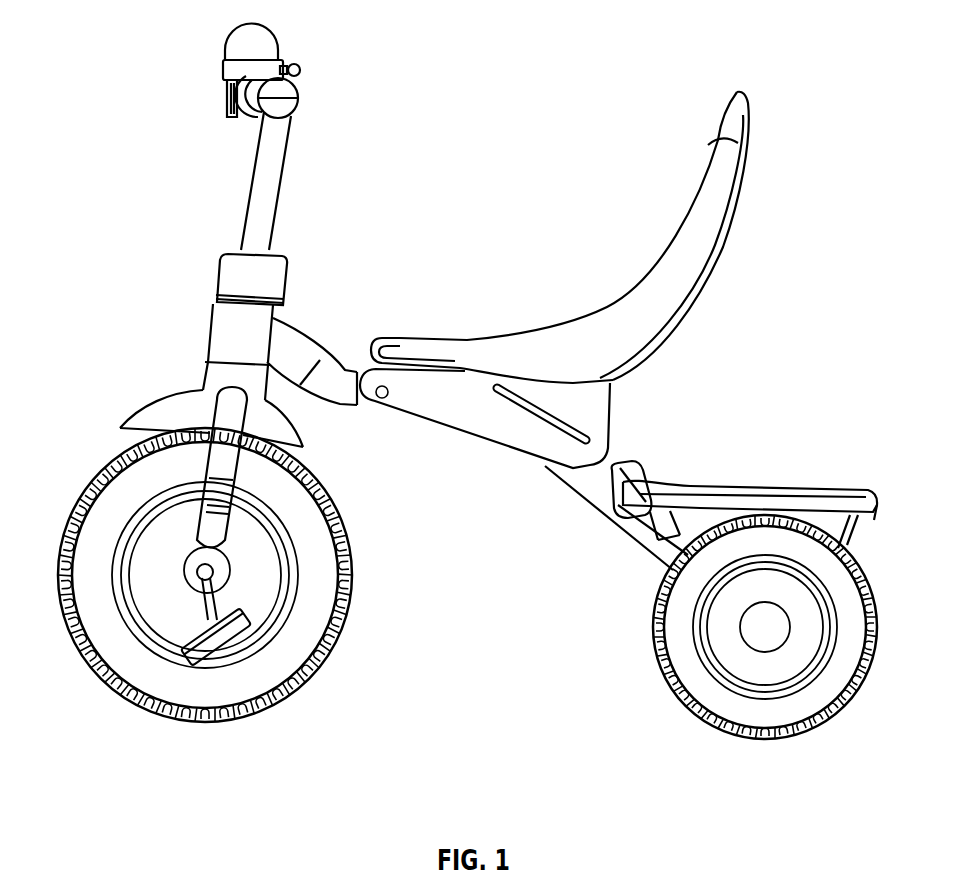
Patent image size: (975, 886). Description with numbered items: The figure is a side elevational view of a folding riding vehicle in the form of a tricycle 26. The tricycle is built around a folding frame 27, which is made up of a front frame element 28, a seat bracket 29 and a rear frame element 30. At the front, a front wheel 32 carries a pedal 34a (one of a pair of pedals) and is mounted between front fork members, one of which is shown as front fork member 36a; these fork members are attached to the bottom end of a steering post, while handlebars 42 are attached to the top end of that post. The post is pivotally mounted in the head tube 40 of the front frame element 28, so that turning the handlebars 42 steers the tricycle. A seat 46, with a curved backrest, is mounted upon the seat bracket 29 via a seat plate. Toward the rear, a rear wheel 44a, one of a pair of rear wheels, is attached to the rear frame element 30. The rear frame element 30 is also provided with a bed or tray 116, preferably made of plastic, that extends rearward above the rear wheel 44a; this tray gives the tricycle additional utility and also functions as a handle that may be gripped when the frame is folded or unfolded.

The tricycle 26 is at (189, 749).
The folding frame 27 is at (457, 520).
The front frame element 28 is at (300, 337).
The seat bracket 29 is at (614, 412).
The rear frame element 30 is at (596, 462).
The front wheel 32 is at (92, 666).
The pedal 34a is at (218, 663).
The front fork member 36a is at (228, 466).
The head tube 40 is at (213, 328).
The handlebars 42 is at (299, 97).
The rear wheel 44a is at (778, 736).
The seat 46 is at (733, 223).
The bed or tray 116 is at (834, 481).